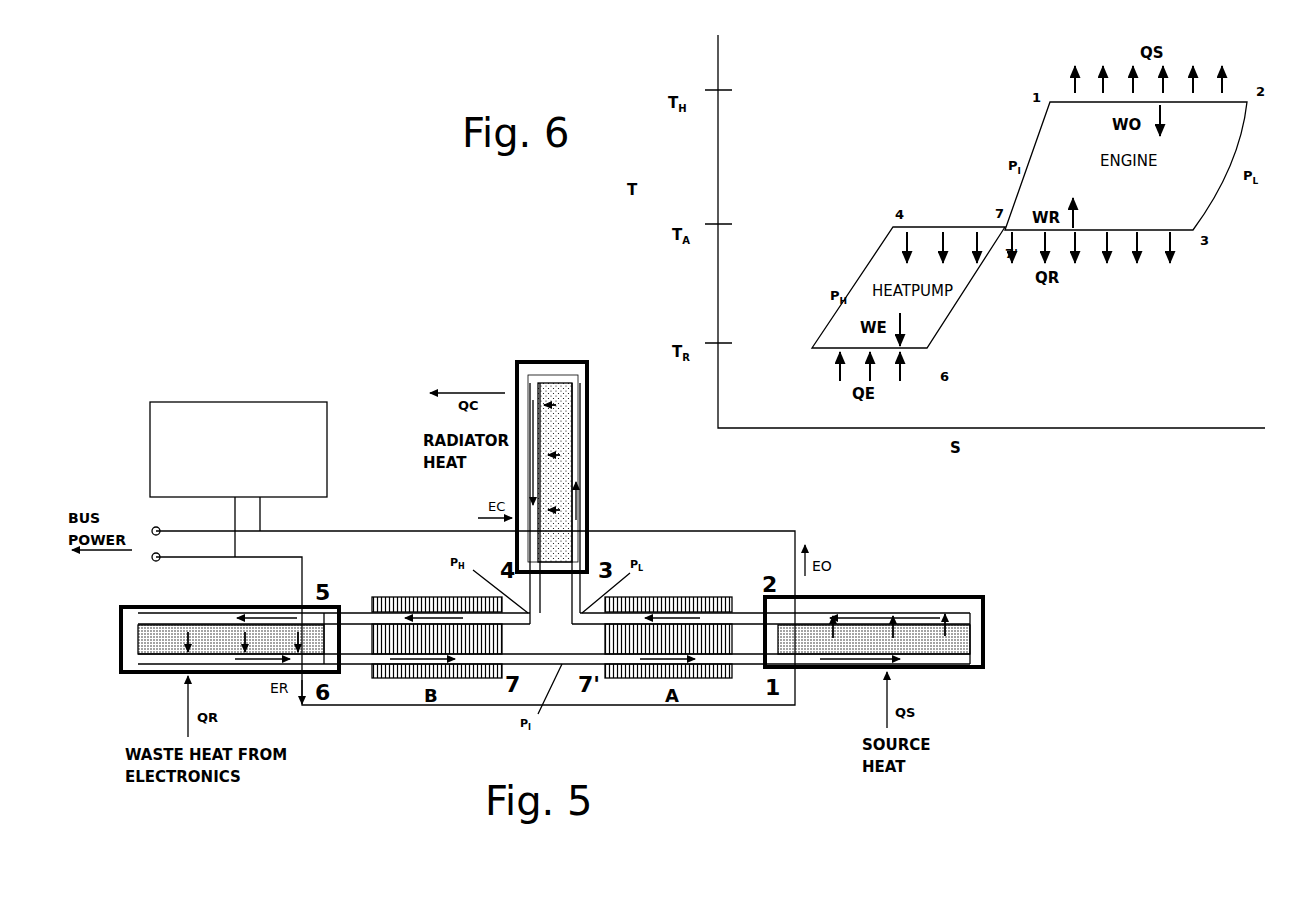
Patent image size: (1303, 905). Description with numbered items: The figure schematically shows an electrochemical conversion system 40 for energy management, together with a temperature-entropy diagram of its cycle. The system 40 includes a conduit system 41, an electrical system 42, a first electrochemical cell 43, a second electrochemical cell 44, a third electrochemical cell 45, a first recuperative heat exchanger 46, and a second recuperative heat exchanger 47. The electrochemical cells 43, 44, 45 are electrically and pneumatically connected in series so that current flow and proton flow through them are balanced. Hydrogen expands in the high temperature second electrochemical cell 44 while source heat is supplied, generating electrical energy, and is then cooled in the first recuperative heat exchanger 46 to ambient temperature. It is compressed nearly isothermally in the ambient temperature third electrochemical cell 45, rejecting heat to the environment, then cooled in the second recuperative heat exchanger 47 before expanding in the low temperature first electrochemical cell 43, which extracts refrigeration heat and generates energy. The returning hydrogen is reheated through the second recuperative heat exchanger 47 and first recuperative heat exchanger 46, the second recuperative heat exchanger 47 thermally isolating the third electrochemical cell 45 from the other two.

The system 40 is at (287, 372).
The conduit system 41 is at (746, 598).
The electrical system 42 is at (380, 520).
The first electrochemical cell 43 is at (148, 605).
The second electrochemical cell 44 is at (917, 592).
The third electrochemical cell 45 is at (510, 356).
The first recuperative heat exchanger 46 is at (668, 592).
The second recuperative heat exchanger 47 is at (434, 594).